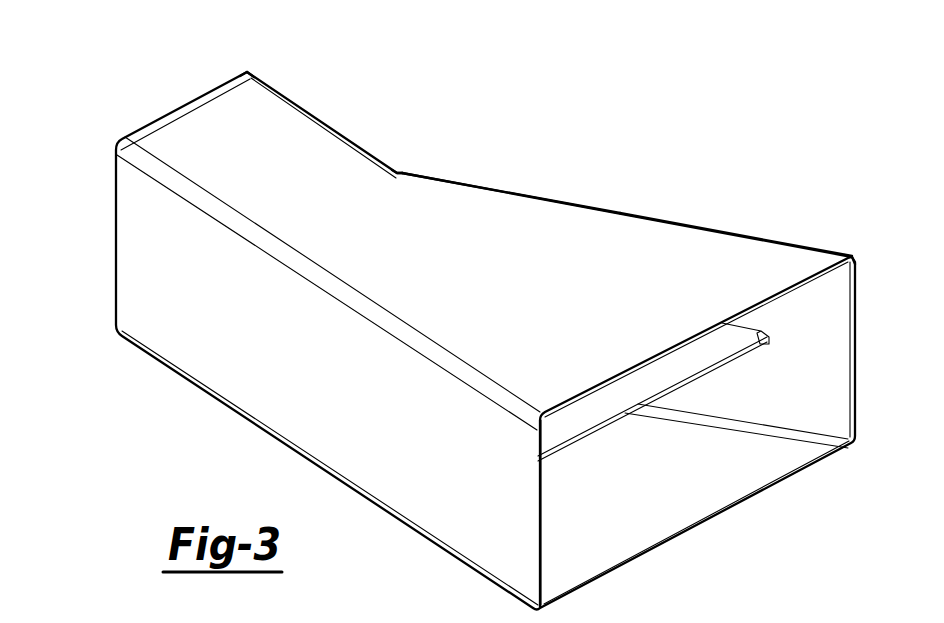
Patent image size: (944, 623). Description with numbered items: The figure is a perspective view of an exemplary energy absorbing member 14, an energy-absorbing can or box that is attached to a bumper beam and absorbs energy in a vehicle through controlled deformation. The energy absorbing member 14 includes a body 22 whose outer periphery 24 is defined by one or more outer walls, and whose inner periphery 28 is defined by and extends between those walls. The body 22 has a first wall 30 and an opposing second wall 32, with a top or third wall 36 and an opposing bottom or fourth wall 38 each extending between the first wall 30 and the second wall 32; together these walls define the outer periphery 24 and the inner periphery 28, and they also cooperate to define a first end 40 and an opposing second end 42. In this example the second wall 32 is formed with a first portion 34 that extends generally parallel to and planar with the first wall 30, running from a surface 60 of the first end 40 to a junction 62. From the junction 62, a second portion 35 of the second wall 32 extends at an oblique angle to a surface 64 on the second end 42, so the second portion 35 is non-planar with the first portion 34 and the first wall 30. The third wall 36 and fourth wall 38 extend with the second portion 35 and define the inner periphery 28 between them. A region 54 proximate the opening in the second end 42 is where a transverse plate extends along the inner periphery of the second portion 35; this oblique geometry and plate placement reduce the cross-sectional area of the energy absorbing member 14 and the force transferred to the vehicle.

The energy absorbing member 14 is at (817, 150).
The body 22 is at (105, 247).
The outer periphery 24 is at (430, 322).
The inner periphery 28 is at (690, 496).
The first wall 30 is at (172, 338).
The second wall 32 is at (510, 188).
The first portion 34 is at (323, 120).
The second portion 35 is at (645, 217).
The third wall 36 is at (318, 250).
The fourth wall 38 is at (627, 535).
The first end 40 is at (185, 100).
The second end 42 is at (818, 278).
The region 54 is at (769, 338).
The surface 60 is at (250, 70).
The junction 62 is at (398, 171).
The surface 64 is at (853, 255).